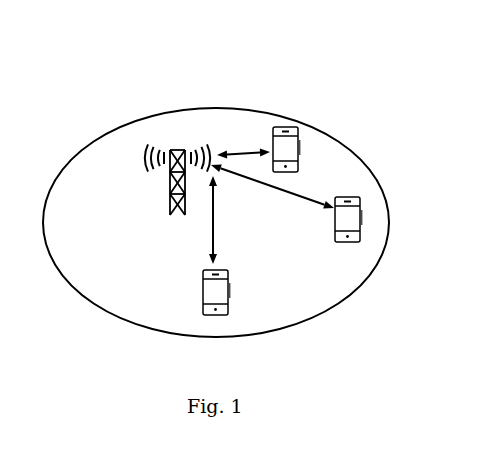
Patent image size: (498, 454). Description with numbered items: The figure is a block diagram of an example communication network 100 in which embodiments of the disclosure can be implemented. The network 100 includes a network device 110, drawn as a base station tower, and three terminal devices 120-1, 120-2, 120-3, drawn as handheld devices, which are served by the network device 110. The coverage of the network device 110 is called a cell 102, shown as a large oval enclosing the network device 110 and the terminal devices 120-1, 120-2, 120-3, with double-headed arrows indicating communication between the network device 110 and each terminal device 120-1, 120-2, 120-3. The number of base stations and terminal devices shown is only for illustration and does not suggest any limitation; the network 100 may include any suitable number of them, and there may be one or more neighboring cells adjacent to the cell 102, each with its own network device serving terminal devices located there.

The communication network 100 is at (159, 37).
The cell 102 is at (88, 145).
The network device 110 is at (178, 150).
The terminal device 120-1 is at (283, 128).
The terminal device 120-2 is at (350, 197).
The terminal device 120-3 is at (221, 270).